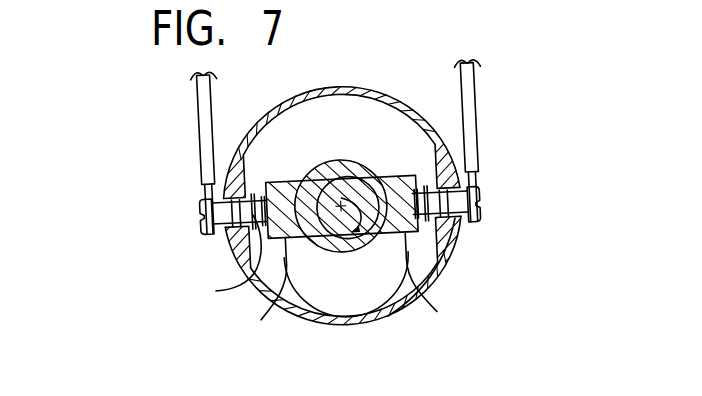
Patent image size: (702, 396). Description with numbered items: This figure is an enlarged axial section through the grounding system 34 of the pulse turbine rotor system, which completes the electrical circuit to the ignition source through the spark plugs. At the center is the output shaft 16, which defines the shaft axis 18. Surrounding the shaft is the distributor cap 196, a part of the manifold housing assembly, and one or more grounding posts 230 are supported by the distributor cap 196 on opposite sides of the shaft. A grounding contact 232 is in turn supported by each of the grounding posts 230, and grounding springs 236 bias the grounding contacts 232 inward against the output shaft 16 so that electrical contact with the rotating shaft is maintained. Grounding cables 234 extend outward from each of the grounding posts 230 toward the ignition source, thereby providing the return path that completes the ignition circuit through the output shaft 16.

The grounding system 34 is at (183, 158).
The distributor cap 196 is at (345, 87).
The output shaft 16 is at (346, 165).
The shaft axis 18 is at (330, 243).
The grounding post 230 is at (231, 214).
The grounding contact 232 is at (273, 298).
The grounding cable 234 is at (207, 116).
The grounding spring 236 is at (462, 281).